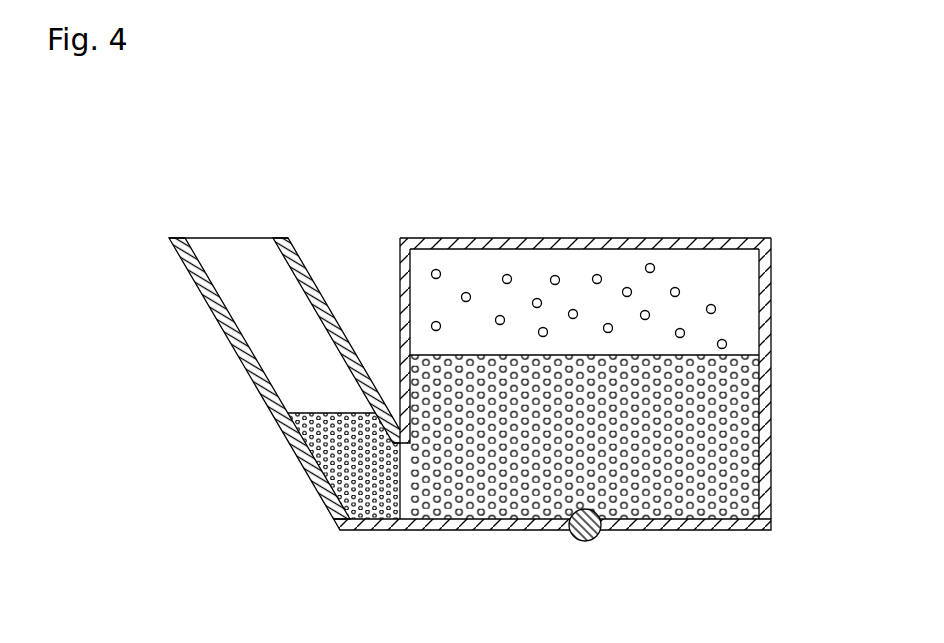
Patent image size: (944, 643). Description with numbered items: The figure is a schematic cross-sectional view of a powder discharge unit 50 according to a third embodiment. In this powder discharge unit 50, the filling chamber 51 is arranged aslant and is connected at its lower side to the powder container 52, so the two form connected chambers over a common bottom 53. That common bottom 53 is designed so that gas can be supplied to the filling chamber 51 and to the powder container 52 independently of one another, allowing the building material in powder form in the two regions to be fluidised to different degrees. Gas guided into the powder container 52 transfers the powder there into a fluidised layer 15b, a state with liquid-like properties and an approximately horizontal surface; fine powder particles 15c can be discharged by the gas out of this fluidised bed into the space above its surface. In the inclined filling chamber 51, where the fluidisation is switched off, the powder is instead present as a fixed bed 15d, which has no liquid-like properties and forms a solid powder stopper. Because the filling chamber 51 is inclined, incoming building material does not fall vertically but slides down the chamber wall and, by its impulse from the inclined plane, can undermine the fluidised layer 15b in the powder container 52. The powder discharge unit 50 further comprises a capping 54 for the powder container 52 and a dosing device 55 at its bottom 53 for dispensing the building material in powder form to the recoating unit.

The powder discharge unit 50 is at (593, 373).
The filling chamber 51 is at (230, 250).
The powder container 52 is at (445, 258).
The common bottom 53 is at (710, 531).
The capping 54 is at (557, 248).
The dosing device 55 is at (583, 540).
The fluidised powder 15b is at (745, 424).
The fine powder particles 15c is at (716, 310).
The fixed bed 15d is at (288, 425).